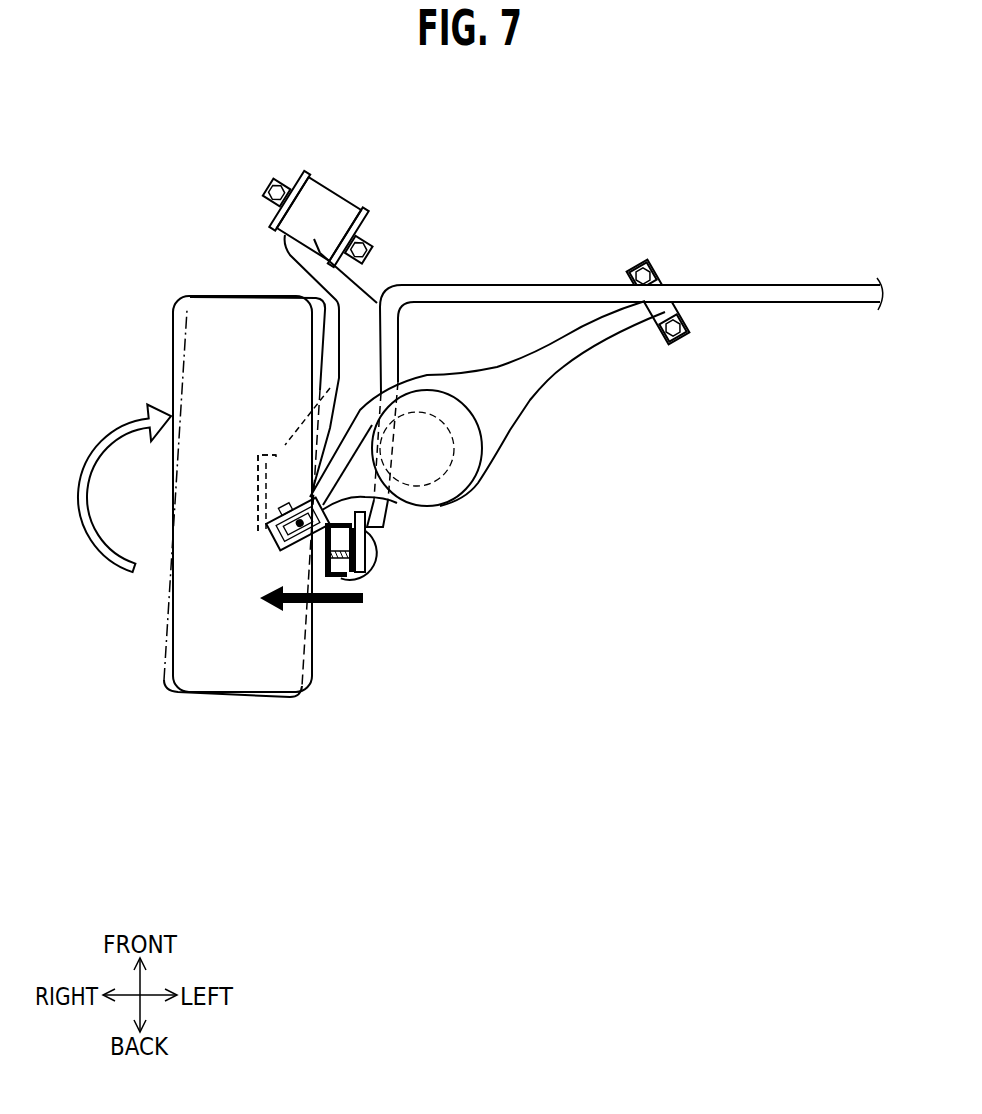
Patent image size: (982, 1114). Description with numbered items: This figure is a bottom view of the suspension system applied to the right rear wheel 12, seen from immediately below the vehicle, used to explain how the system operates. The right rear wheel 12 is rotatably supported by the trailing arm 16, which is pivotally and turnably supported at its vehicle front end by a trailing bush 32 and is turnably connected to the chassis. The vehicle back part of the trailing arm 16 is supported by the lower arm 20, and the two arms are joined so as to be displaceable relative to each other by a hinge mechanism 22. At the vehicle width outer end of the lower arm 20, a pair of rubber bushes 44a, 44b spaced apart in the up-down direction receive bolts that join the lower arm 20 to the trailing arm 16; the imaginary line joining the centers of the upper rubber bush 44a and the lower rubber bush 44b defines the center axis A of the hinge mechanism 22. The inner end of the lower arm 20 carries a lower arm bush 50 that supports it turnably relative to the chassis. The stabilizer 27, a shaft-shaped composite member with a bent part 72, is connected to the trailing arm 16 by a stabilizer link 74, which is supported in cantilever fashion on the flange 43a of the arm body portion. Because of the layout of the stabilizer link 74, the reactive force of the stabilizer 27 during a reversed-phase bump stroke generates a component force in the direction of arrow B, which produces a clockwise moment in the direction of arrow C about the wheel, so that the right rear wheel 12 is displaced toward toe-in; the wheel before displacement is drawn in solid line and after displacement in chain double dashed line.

The rear wheel 12 is at (163, 687).
The trailing arm 16 is at (334, 340).
The lower arm 20 is at (537, 430).
The hinge mechanism 22 is at (268, 553).
The stabilizer 27 is at (782, 284).
The trailing bush 32 is at (334, 192).
The flange 43a is at (326, 554).
The upper rubber bush 44a is at (261, 459).
The lower rubber bush 44b is at (278, 533).
The lower arm bush 50 is at (648, 312).
The bent part 72 is at (388, 287).
The stabilizer link 74 is at (366, 535).
The center axis A is at (308, 500).
The arrow B (component force direction) B is at (341, 608).
The arrow C (clockwise moment direction) C is at (76, 496).